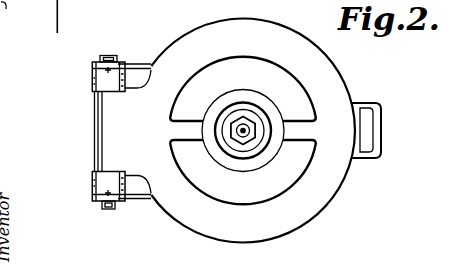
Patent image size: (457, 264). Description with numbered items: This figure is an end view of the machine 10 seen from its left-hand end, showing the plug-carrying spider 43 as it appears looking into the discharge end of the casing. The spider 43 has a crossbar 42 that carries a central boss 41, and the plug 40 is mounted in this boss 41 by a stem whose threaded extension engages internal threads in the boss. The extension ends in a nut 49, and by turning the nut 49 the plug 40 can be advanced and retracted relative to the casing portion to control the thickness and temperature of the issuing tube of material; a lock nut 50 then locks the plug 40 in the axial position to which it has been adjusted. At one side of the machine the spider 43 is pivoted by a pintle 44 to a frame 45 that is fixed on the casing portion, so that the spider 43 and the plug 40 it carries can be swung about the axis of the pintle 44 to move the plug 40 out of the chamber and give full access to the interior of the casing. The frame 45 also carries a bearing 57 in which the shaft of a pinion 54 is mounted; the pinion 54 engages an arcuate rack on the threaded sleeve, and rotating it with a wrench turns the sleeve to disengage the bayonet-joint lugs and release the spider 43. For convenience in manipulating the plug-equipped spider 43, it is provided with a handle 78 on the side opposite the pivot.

The caster assembly 10 is at (44, 28).
The plug 40 is at (252, 97).
The boss 41 is at (260, 111).
The crossbar 42 is at (189, 127).
The spider 43 is at (194, 42).
The pintle 44 is at (108, 55).
The frame 45 is at (96, 74).
The nut 49 is at (244, 133).
The lock nut 50 is at (270, 147).
The pinion 54 is at (76, 16).
The bearing 57 is at (113, 0).
The handle 78 is at (374, 130).